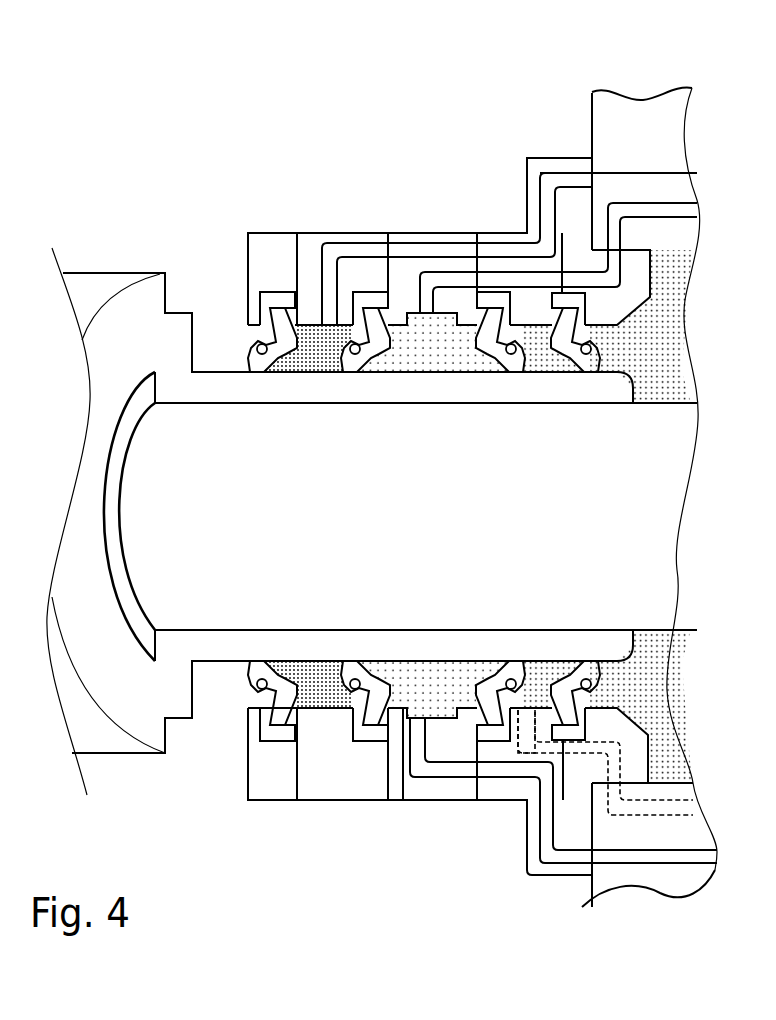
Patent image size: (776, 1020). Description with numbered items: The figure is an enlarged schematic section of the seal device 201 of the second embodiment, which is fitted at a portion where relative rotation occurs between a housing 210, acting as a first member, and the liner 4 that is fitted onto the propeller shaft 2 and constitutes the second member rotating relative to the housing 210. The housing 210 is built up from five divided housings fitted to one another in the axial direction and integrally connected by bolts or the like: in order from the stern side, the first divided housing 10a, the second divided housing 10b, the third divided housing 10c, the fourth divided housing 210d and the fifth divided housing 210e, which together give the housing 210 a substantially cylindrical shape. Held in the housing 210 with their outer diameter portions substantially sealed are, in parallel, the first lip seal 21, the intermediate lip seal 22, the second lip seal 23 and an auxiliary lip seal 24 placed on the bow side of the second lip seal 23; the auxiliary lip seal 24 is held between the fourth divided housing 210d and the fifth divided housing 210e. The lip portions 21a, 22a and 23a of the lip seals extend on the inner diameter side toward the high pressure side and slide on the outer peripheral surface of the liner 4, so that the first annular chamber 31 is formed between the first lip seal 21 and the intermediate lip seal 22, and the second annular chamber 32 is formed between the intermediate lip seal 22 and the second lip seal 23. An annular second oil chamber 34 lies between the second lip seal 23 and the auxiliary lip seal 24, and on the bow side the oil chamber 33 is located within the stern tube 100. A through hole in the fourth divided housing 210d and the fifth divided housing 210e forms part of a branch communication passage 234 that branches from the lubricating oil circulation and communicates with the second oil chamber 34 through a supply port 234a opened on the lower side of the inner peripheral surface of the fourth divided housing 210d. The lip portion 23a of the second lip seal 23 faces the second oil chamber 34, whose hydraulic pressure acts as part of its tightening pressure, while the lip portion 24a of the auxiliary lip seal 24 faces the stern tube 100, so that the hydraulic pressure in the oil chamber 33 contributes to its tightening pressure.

The stern tube 100 is at (638, 136).
The seal device 201 is at (429, 405).
The housing 210 is at (233, 257).
The fourth divided housing 210d is at (498, 240).
The fifth divided housing 210e is at (543, 158).
The first divided housing 10a is at (273, 240).
The second divided housing 10b is at (340, 238).
The third divided housing 10c is at (428, 240).
The propeller shaft 2 is at (700, 392).
The liner 4 is at (227, 655).
The first lip seal 21 is at (290, 373).
The lip portion 21a is at (262, 375).
The intermediate lip seal 22 is at (383, 373).
The lip portion 22a is at (352, 375).
The second lip seal 23 is at (485, 373).
The lip portion 23a is at (512, 373).
The auxiliary lip seal 24 is at (573, 373).
The lip portion 24a is at (590, 373).
The first annular chamber 31 is at (318, 665).
The second annular chamber 32 is at (426, 665).
The oil chamber 33 is at (649, 667).
The second oil chamber 34 is at (541, 665).
The branch communication passage 234 is at (657, 807).
The supply port 234a is at (518, 712).